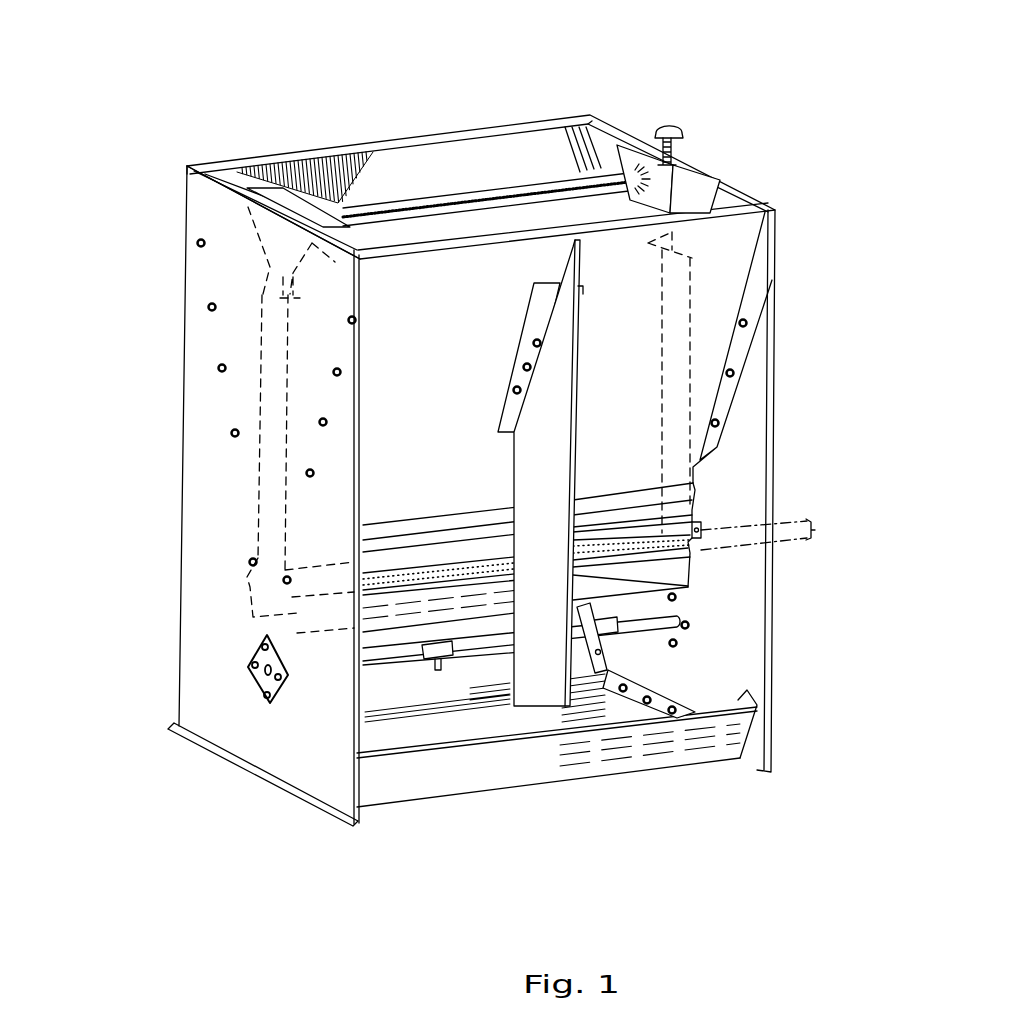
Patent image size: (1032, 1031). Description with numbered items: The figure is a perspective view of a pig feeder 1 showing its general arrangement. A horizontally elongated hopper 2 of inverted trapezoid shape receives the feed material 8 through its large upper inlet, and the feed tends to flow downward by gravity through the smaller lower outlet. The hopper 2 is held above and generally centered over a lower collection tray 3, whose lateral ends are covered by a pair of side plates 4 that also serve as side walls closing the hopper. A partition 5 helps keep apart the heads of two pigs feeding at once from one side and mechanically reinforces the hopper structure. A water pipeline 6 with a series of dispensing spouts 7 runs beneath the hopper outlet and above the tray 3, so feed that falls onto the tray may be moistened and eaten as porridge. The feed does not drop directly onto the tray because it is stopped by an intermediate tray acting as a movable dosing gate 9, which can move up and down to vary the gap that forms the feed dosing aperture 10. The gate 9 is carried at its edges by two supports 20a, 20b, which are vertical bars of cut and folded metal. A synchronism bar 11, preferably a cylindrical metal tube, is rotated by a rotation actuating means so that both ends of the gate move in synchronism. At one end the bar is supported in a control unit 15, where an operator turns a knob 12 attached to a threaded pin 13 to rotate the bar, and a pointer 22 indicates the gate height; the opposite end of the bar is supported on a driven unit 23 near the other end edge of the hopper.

The pig feeder 1 is at (200, 115).
The hopper 2 is at (490, 140).
The lower collection tray 3 is at (620, 740).
The side plates 4 is at (312, 744).
The partition 5 is at (538, 700).
The water pipeline 6 is at (642, 623).
The dispensing spouts 7 is at (443, 668).
The feed material 8 is at (693, 558).
The movable dosing gate 9 is at (315, 597).
The feed dosing aperture 10 is at (813, 530).
The synchronism bar 11 is at (438, 182).
The knob 12 is at (681, 126).
The threaded pin 13 is at (662, 160).
The control unit 15 is at (718, 168).
The support 20a is at (672, 360).
The support 20b is at (268, 398).
The pointer 22 is at (604, 145).
The driven unit 23 is at (237, 225).